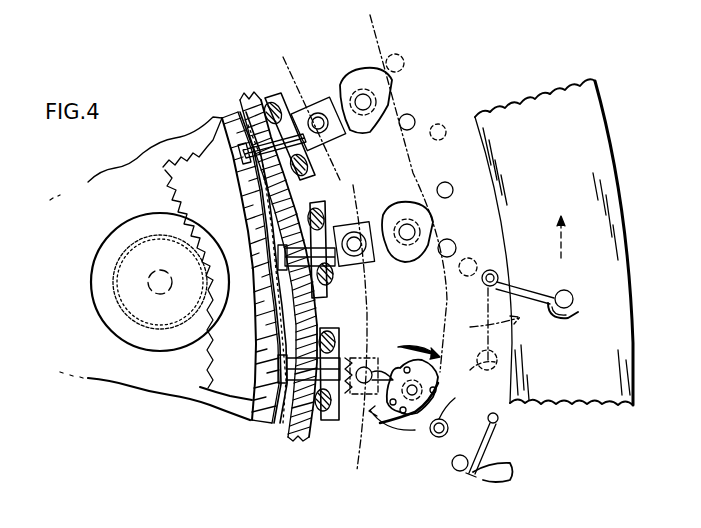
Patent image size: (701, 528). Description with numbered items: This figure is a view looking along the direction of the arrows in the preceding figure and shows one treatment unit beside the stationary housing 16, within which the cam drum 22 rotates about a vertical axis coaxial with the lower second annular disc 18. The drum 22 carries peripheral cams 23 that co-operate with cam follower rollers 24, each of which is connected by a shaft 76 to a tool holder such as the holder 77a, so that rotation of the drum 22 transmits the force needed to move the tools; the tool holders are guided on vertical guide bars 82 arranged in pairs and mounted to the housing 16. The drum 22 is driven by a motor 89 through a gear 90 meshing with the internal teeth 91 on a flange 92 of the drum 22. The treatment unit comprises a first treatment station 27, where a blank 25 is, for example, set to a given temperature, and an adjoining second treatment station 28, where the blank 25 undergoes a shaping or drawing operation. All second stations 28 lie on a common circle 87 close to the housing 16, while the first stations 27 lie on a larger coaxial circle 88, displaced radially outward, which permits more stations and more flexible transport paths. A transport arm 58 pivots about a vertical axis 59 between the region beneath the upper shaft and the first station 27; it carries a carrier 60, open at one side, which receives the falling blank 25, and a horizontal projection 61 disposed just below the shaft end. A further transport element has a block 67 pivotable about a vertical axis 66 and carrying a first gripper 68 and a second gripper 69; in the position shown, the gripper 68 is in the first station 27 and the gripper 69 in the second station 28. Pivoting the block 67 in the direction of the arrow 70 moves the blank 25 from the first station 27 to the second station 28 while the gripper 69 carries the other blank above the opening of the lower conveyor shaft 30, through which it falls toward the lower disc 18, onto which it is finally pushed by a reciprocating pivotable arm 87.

The housing 16 is at (248, 100).
The second annular disc 18 is at (587, 110).
The cam drum 22 is at (222, 112).
The cam 23 is at (225, 380).
The cam follower roller 24 is at (288, 418).
The blank 25 is at (363, 367).
The first treatment station 27 is at (429, 458).
The second treatment station 28 is at (379, 337).
The lower conveyor shaft 30 is at (520, 374).
The transport arm 58 is at (490, 440).
The vertical axis 59 is at (500, 418).
The carrier 60 is at (456, 472).
The projection 61 is at (507, 477).
The vertical axis 66 is at (410, 400).
The block 67 is at (413, 177).
The first gripper 68 is at (445, 420).
The second gripper 69 is at (400, 362).
The arrow 70 is at (418, 345).
The shaft 76 is at (263, 187).
The holder 77a is at (320, 100).
The guide bar 82 is at (338, 173).
The arm 87 is at (293, 67).
The circle 88 is at (373, 47).
The motor 89 is at (91, 280).
The gear 90 is at (137, 242).
The internal teeth 91 is at (175, 193).
The flange 92 is at (227, 380).